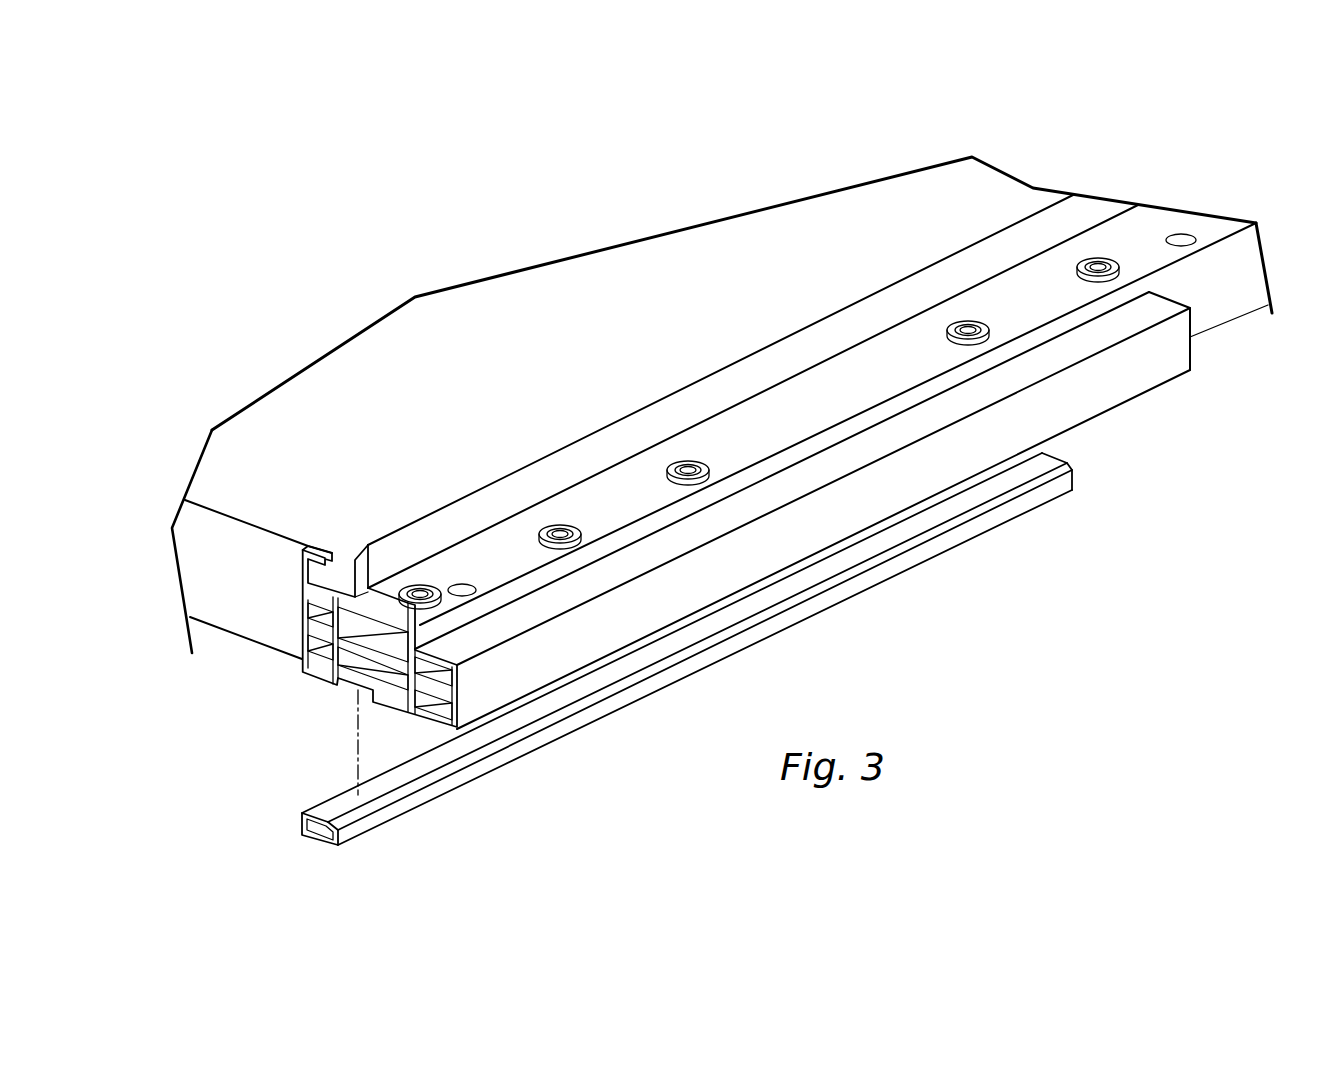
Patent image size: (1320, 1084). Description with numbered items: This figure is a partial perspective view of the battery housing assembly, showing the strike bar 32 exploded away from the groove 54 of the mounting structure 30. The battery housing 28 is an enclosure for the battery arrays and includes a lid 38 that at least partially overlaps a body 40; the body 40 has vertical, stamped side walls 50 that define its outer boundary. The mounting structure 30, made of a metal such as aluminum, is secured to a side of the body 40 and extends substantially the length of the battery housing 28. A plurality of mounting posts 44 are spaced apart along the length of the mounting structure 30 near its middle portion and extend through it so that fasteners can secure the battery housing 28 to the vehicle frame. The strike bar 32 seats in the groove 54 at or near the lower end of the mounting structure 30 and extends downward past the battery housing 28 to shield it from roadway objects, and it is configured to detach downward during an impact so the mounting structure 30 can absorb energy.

The battery housing 28 is at (808, 182).
The mounting structure 30 is at (1072, 427).
The strike bar 32 is at (326, 843).
The lid 38 is at (550, 305).
The body 40 is at (232, 545).
The mounting post 44 is at (425, 600).
The side wall 50 is at (263, 588).
The groove 54 is at (351, 681).